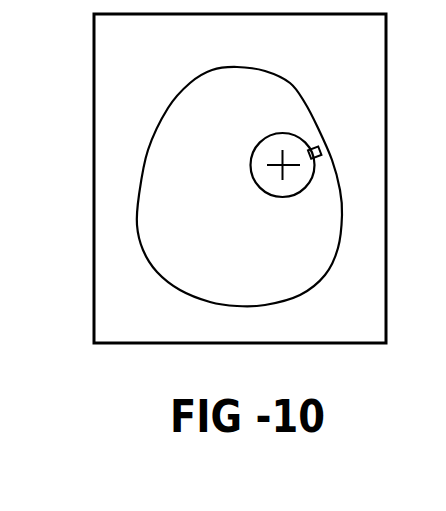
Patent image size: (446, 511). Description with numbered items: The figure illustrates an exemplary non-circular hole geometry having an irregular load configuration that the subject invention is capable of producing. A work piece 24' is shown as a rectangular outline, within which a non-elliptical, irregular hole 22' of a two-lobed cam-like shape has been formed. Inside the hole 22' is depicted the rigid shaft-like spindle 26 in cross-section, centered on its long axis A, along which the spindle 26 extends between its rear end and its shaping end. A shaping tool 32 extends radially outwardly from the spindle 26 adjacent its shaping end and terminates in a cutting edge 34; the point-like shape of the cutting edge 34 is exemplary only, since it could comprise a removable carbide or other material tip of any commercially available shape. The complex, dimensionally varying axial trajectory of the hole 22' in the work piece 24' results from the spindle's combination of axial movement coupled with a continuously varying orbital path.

The work piece 24' is at (212, 178).
The irregular hole 22' is at (197, 186).
The spindle 26 is at (291, 164).
The shaping tool 32 is at (312, 136).
The cutting edge 34 is at (324, 153).
The long axis A is at (281, 166).